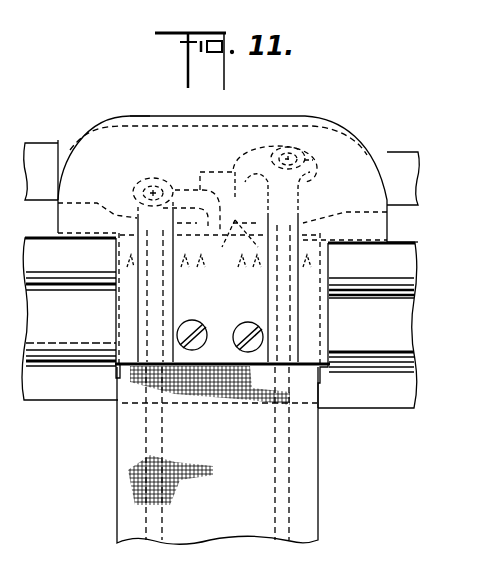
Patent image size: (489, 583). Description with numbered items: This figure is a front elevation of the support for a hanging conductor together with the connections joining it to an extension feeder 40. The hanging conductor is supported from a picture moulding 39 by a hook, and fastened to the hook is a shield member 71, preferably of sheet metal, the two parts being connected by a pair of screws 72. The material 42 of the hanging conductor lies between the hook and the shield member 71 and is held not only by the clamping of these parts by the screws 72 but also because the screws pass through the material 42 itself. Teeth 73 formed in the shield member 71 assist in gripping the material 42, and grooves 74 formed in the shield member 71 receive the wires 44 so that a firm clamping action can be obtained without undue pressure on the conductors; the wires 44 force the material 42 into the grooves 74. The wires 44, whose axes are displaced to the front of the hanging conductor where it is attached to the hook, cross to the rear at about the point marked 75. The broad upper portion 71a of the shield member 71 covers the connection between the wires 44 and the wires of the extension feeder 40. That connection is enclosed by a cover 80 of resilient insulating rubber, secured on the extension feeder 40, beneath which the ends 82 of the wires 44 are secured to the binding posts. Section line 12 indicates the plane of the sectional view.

The section line 12 is at (57, 132).
The picture moulding 39 is at (403, 263).
The extension feeder 40 is at (404, 153).
The material of the hanging conductor 42 is at (303, 446).
The wires 44 is at (253, 168).
The shield member 71 is at (83, 219).
The upper portion of the shield member 71a is at (127, 146).
The screws 72 is at (250, 320).
The teeth 73 is at (219, 219).
The grooves 74 is at (153, 305).
The point where the wires cross 75 is at (116, 502).
The cover 80 is at (246, 124).
The ends of the wires 82 is at (130, 186).